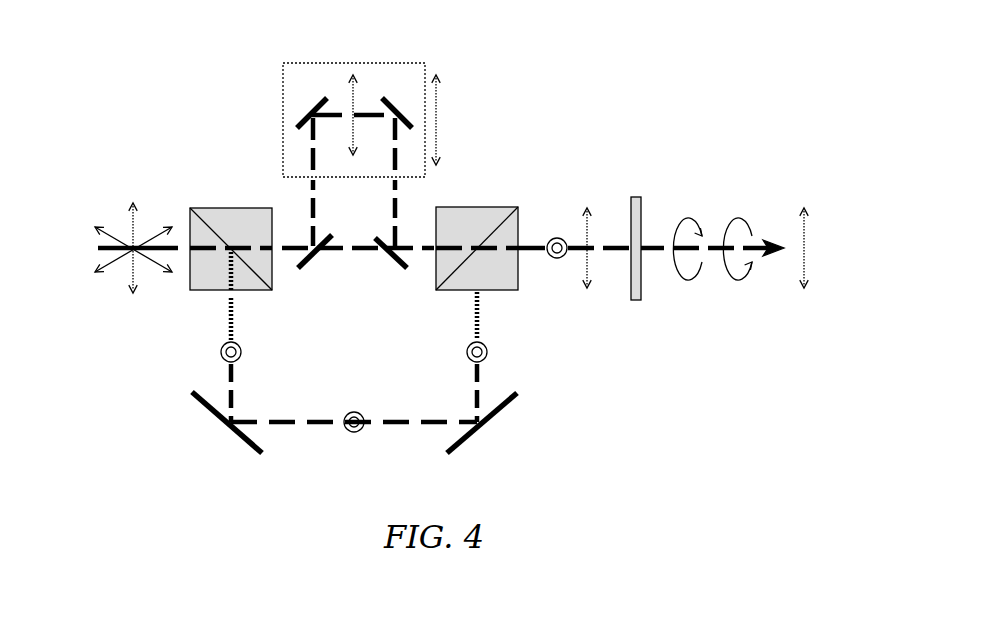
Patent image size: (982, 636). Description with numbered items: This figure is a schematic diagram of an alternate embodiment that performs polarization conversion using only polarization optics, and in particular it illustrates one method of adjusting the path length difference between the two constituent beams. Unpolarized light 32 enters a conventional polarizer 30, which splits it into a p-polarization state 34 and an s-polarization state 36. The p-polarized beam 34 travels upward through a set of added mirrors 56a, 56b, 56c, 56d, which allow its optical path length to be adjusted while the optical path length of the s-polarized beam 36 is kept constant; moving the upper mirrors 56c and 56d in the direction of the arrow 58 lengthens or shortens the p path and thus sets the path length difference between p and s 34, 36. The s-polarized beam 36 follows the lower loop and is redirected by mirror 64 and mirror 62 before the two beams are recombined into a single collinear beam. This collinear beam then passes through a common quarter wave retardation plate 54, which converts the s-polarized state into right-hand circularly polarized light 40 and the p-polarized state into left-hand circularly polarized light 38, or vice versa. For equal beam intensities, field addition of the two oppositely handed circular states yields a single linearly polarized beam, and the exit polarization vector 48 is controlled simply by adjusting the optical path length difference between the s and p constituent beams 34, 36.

The polarizer 30 is at (240, 208).
The unpolarized light 32 is at (110, 185).
The p-polarization state 34 is at (352, 108).
The s-polarization state 36 is at (548, 240).
The left-hand circularly polarized light 38 is at (690, 216).
The right-hand circularly polarized light 40 is at (742, 282).
The exit polarization vector 48 is at (806, 225).
The quarter wave retardation plate 54 is at (636, 300).
The mirror 56a is at (320, 262).
The mirror 56b is at (393, 262).
The mirror 56c is at (305, 108).
The mirror 56d is at (390, 100).
The arrow 58 is at (440, 115).
The mirror 62 is at (498, 413).
The mirror 64 is at (215, 418).